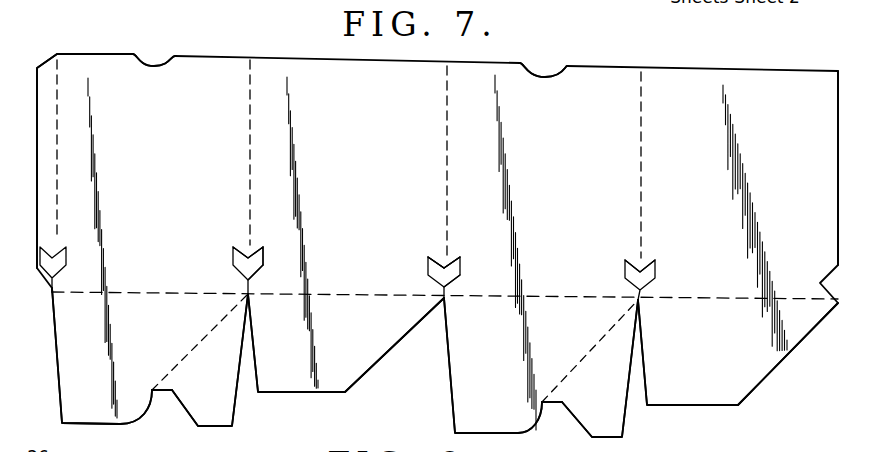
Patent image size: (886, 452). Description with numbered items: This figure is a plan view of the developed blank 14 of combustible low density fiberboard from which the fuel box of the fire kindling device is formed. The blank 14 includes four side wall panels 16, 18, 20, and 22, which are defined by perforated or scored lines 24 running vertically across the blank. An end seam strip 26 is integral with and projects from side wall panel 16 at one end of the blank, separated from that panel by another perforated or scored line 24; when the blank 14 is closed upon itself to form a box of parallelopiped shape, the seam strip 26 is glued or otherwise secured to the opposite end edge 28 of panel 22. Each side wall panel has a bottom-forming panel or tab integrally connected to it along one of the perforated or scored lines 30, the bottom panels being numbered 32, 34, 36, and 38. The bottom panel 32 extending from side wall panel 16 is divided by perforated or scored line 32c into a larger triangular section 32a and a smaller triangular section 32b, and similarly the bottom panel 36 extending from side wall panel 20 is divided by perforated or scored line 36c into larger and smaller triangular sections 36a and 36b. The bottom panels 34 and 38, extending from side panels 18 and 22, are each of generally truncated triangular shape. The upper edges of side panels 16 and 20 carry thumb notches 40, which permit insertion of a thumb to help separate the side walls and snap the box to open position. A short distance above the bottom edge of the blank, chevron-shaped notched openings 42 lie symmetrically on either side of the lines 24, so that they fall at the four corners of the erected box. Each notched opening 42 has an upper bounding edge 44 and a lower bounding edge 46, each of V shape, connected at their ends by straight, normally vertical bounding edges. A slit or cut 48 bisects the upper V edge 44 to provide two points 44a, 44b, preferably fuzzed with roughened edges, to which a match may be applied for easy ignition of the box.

The blank 14 is at (300, 58).
The side wall panel 16 is at (165, 175).
The side wall panel 18 is at (348, 181).
The side wall panel 20 is at (560, 183).
The side wall panel 22 is at (753, 192).
The perforated or scored lines 24 is at (58, 147).
The end seam strip 26 is at (46, 68).
The end edge 28 is at (837, 160).
The perforated or scored lines 30 is at (145, 292).
The bottom panel 32 is at (155, 395).
The larger triangular section 32a is at (148, 356).
The smaller triangular section 32b is at (220, 388).
The perforated or scored line 32c is at (192, 345).
The bottom panel 34 is at (338, 345).
The bottom panel 36 is at (545, 405).
The larger triangular section 36a is at (527, 373).
The smaller triangular section 36b is at (615, 401).
The perforated or scored line 36c is at (592, 352).
The bottom panel 38 is at (683, 366).
The thumb notches 40 is at (156, 64).
The notched openings 42 is at (66, 255).
The upper bounding edge 44 is at (262, 252).
The point 44a is at (438, 264).
The point 44b is at (452, 262).
The lower bounding edge 46 is at (257, 272).
The slit or cut 48 is at (243, 257).